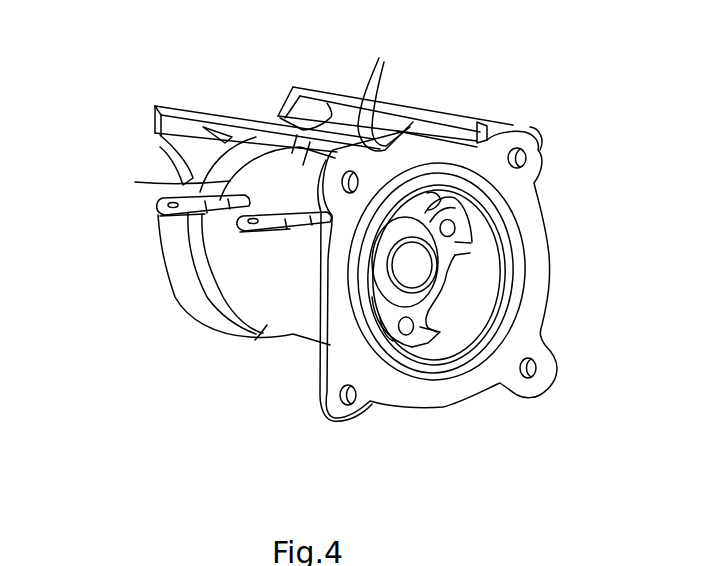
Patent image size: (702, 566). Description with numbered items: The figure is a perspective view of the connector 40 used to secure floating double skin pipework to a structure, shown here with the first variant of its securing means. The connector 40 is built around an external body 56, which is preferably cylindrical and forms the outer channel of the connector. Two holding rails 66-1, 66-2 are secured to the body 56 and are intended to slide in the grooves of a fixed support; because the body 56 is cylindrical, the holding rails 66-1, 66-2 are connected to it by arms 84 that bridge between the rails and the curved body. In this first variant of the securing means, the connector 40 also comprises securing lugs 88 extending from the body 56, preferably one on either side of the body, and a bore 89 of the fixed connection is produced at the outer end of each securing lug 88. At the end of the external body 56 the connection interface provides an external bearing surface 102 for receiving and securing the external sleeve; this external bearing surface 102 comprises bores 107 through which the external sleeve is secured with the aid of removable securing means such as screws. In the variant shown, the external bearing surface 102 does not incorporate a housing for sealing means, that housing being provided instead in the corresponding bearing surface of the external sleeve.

The connector 40 is at (303, 358).
The external body 56 is at (267, 325).
The holding rail 66-1 is at (440, 113).
The holding rail 66-2 is at (180, 106).
The arms 84 is at (182, 170).
The securing lug 88 is at (245, 224).
The bore 89 is at (158, 213).
The external bearing surface 102 is at (463, 392).
The bores 107 is at (383, 399).